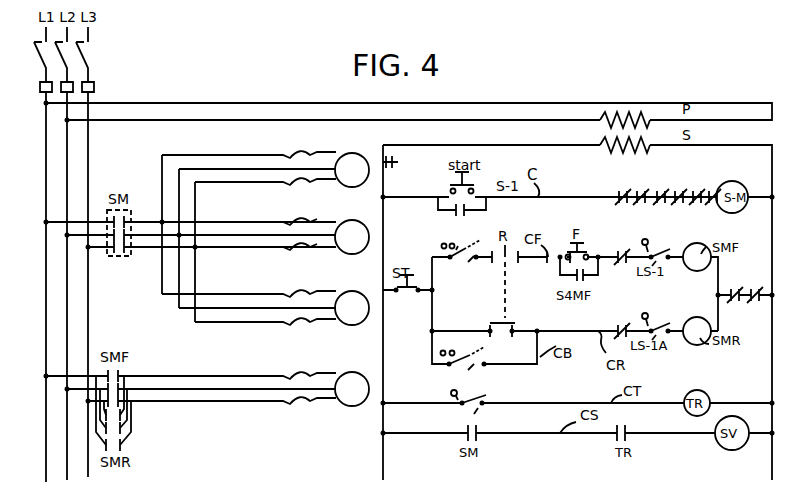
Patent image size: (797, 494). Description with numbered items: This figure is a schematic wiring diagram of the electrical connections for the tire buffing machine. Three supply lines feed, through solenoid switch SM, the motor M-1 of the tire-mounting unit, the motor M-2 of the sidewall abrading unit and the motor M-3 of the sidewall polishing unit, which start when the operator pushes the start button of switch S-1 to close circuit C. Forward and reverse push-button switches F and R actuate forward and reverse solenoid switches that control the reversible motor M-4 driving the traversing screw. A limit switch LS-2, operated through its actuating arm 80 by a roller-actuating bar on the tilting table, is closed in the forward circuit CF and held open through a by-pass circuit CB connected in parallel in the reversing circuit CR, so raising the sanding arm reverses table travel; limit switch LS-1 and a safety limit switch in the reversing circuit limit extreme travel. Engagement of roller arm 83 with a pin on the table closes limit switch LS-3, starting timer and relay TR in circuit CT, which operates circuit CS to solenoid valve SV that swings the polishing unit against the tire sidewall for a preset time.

The actuating arm 80 is at (442, 245).
The roller arm 83 is at (452, 392).
The motor M- 1 is at (352, 170).
The motor M- 2 is at (352, 237).
The motor M- 3 is at (352, 308).
The motor M- 4 is at (352, 389).